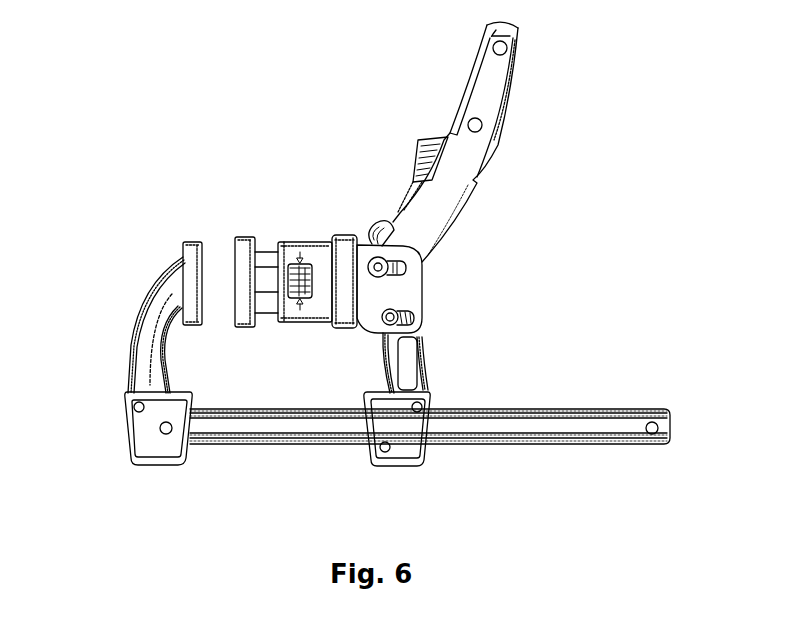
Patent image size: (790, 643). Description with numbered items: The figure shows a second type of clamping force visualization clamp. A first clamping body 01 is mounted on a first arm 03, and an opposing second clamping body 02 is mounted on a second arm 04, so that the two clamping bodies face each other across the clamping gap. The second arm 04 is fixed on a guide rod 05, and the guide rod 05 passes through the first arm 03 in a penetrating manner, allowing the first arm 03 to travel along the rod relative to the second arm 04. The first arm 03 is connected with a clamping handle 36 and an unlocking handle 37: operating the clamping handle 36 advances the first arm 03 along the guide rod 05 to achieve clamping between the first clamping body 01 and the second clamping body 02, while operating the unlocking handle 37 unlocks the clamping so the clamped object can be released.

The first clamping body 01 is at (247, 240).
The second clamping body 02 is at (192, 240).
The first arm 03 is at (427, 354).
The second arm 04 is at (137, 326).
The guide rod 05 is at (258, 447).
The clamping handle 36 is at (462, 195).
The unlocking handle 37 is at (418, 163).